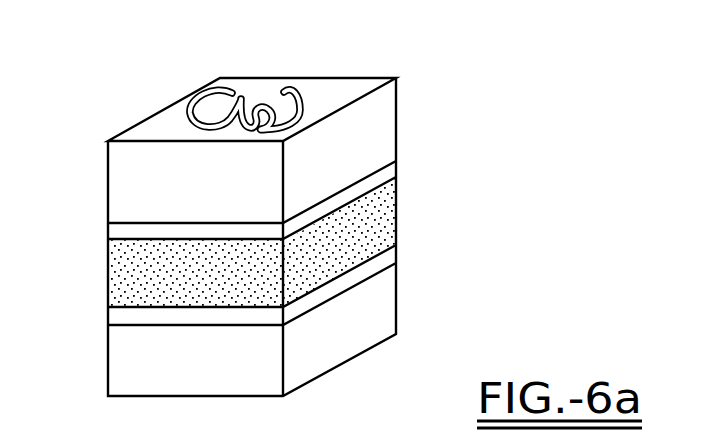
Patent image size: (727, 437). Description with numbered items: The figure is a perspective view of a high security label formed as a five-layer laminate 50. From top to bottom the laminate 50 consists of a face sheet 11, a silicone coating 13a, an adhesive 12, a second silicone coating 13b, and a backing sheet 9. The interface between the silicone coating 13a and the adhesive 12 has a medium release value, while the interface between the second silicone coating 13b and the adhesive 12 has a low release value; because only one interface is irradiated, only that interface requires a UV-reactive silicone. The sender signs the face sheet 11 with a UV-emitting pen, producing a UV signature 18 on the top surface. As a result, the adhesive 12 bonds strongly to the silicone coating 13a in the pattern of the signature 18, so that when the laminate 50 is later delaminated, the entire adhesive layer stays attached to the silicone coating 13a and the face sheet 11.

The five-layer laminate 50 is at (302, 198).
The UV signature 18 is at (190, 110).
The face sheet 11 is at (396, 119).
The silicone coating 13a is at (396, 168).
The adhesive 12 is at (396, 215).
The second silicone coating 13b is at (396, 258).
The backing sheet 9 is at (396, 307).